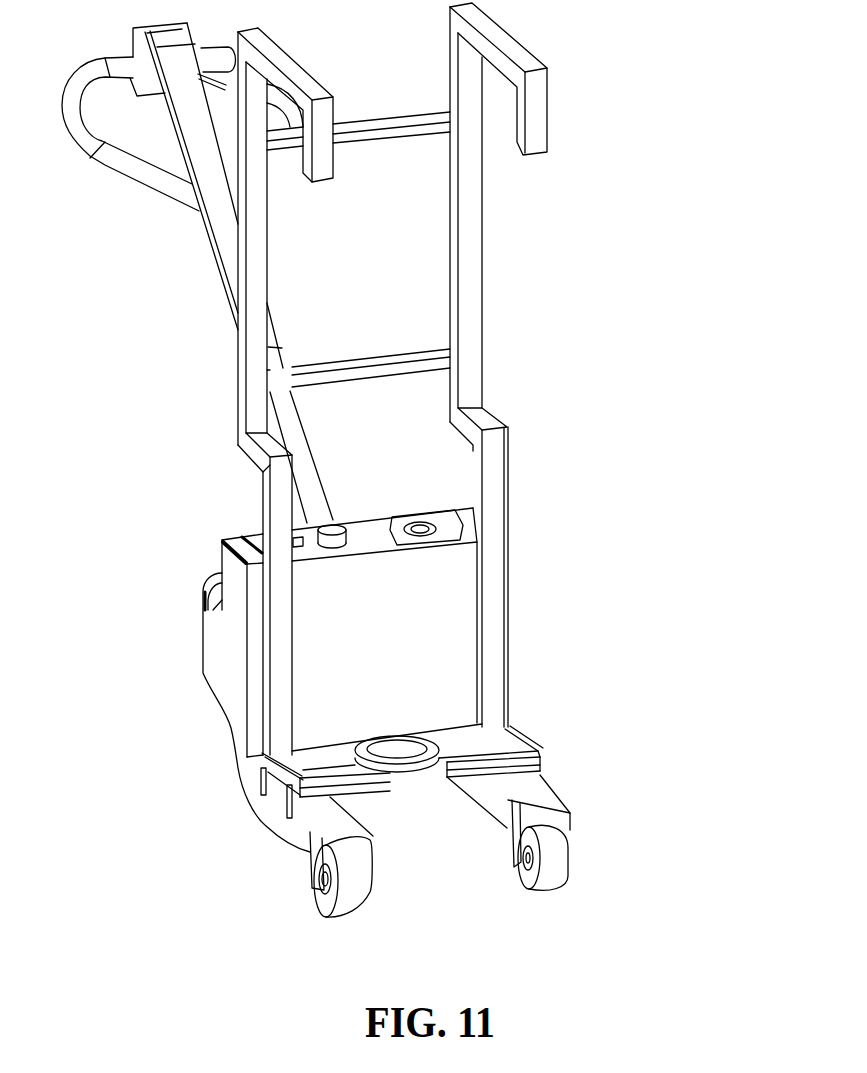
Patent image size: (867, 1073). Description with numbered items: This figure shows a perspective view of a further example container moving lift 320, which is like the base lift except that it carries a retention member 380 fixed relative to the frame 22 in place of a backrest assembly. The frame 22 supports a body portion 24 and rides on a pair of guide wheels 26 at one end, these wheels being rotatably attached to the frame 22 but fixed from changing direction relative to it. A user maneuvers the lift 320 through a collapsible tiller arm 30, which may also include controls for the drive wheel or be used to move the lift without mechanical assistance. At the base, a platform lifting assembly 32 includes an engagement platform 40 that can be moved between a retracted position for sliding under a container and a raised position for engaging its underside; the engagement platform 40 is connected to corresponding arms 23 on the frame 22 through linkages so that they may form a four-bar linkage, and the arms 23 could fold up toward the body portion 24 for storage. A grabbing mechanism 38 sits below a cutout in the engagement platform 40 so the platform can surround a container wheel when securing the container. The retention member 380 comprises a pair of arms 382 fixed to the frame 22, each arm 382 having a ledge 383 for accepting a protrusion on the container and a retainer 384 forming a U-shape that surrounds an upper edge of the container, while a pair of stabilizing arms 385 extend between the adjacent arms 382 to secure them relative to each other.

The lift 320 is at (551, 389).
The collapsible tiller arm 30 is at (207, 240).
The retention member 380 is at (497, 281).
The arms 382 is at (482, 231).
The ledge 383 is at (484, 424).
The retainer 384 is at (322, 116).
The stabilizing arms 385 is at (357, 146).
The body portion 24 is at (235, 653).
The platform lifting assembly 32 is at (542, 729).
The engagement platform 40 is at (488, 744).
The grabbing mechanism 38 is at (415, 787).
The frame 22 is at (275, 823).
The arm 23 is at (487, 815).
The guide wheels 26 is at (315, 902).